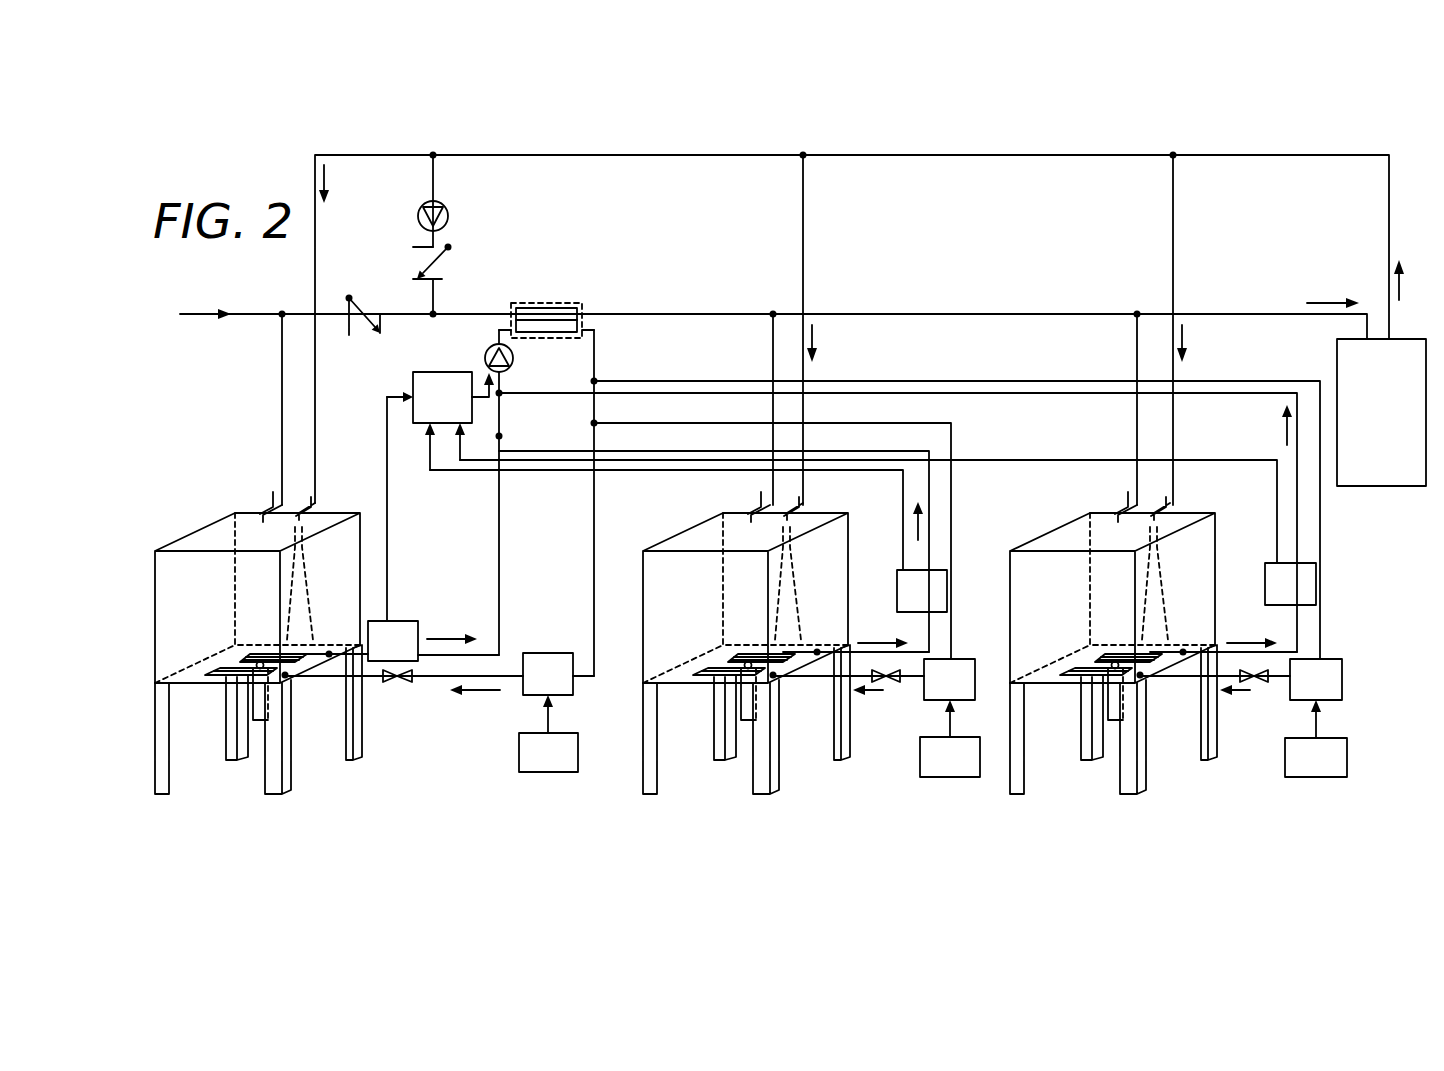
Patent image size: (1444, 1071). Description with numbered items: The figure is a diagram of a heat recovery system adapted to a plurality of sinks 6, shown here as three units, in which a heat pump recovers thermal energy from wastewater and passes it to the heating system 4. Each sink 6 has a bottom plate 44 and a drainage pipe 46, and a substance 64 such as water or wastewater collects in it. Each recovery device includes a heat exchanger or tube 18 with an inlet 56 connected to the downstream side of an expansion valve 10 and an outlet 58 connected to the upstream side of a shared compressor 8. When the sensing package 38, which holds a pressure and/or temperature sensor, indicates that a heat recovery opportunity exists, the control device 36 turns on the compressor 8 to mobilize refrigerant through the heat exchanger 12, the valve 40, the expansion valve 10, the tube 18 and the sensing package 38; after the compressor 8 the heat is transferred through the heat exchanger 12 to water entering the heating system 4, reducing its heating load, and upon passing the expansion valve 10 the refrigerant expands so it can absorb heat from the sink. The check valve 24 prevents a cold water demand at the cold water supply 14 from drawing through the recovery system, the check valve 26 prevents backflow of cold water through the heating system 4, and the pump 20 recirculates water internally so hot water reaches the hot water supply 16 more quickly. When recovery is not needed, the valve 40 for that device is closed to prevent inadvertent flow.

The heating system 4 is at (1373, 427).
The sink 6 is at (215, 525).
The compressor 8 is at (484, 352).
The expansion valve 10 is at (399, 683).
The heat exchanger 12 is at (538, 303).
The cold water supply 14 is at (278, 487).
The hot water supply 16 is at (316, 493).
The heat exchanger or tube 18 is at (215, 680).
The pump 20 is at (444, 205).
The check valve 24 is at (380, 300).
The check valve 26 is at (455, 244).
The control device 36 is at (427, 408).
The sensing package 38 is at (378, 652).
The valve 40 is at (533, 685).
The bottom plate 44 is at (183, 673).
The drainage pipe 46 is at (255, 708).
The inlet of heat exchanger 56 is at (287, 680).
The outlet of heat exchanger 58 is at (330, 653).
The substance 64 is at (297, 650).